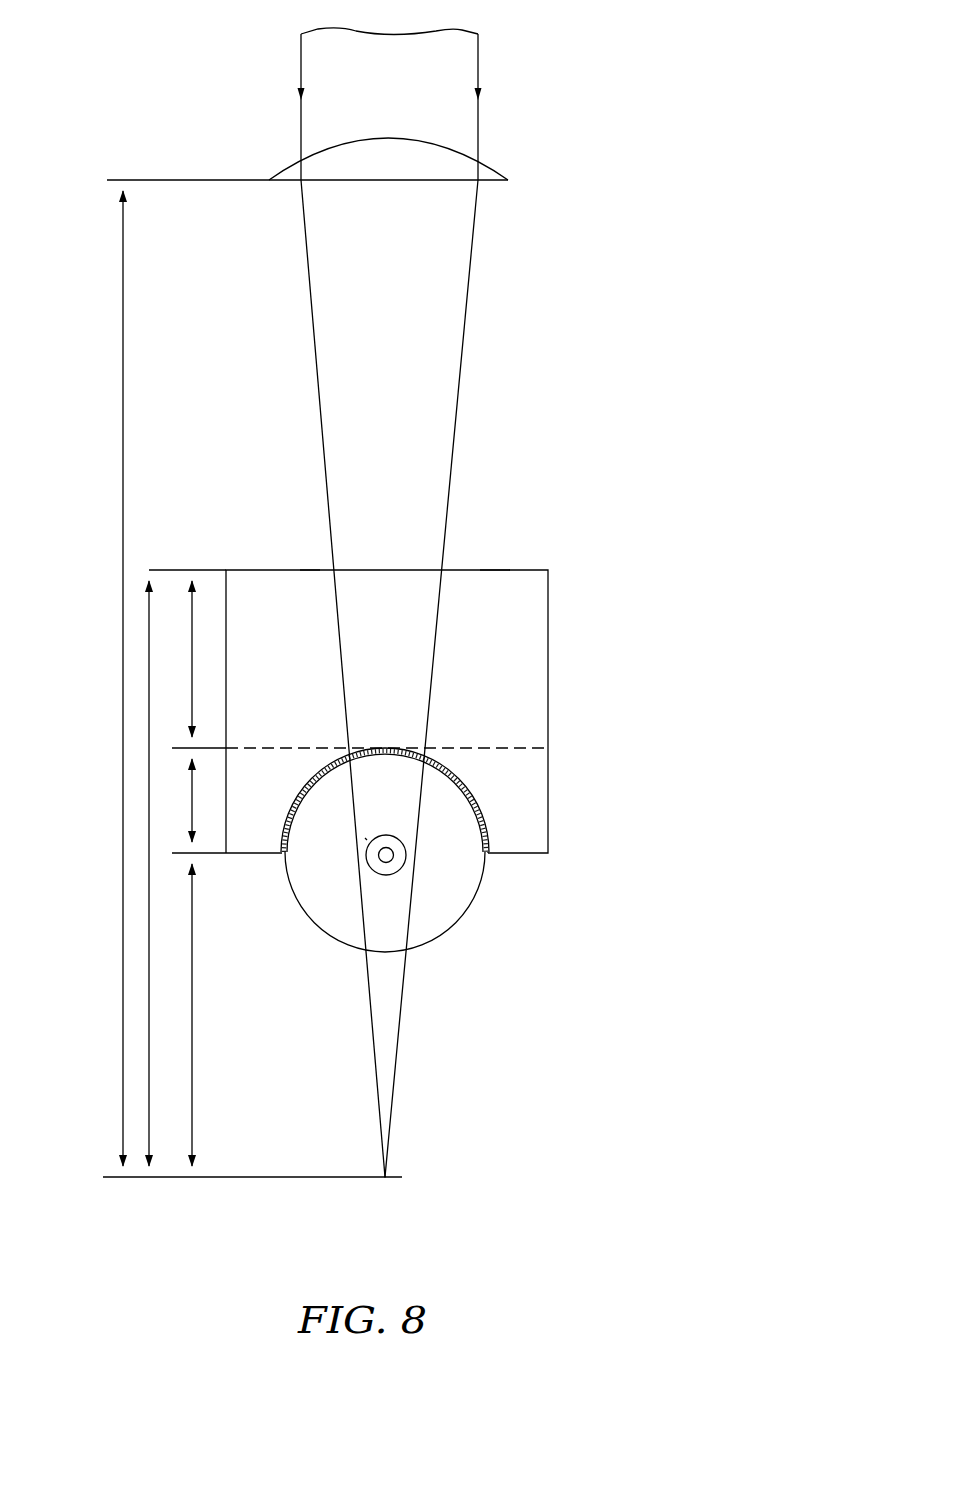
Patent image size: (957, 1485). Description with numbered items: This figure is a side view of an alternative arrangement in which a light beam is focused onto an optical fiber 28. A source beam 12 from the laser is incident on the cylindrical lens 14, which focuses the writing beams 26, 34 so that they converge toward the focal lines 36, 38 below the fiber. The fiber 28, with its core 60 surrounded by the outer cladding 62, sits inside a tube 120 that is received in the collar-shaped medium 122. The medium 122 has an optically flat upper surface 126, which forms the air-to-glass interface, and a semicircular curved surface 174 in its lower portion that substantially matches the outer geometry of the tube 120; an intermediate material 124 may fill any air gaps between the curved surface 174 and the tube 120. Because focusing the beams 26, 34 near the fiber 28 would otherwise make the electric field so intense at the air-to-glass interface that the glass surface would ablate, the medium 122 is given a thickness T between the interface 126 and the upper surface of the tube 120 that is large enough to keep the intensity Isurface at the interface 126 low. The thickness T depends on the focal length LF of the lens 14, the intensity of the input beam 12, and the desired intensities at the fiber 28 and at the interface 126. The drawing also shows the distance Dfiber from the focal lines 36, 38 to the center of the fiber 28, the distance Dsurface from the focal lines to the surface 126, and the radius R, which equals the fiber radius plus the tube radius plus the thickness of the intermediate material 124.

The source beam 12 is at (468, 67).
The cylindrical lens 14 is at (488, 172).
The writing beam 26 is at (427, 722).
The writing beam 34 is at (438, 474).
The line 36 is at (403, 1220).
The line 38 is at (385, 1180).
The optical fiber 28 is at (358, 834).
The core 60 is at (392, 856).
The outer cladding 62 is at (373, 863).
The tube 120 is at (455, 939).
The medium 122 is at (233, 563).
The intermediate material 124 is at (485, 853).
The upper surface 126 is at (292, 568).
The curved surface 174 is at (473, 797).
The focal length LF is at (126, 374).
The thickness T is at (192, 668).
The radius R is at (192, 812).
The distance Dfiber is at (192, 1001).
The distance Dsurface is at (148, 1045).
The intensity Isurface is at (497, 568).